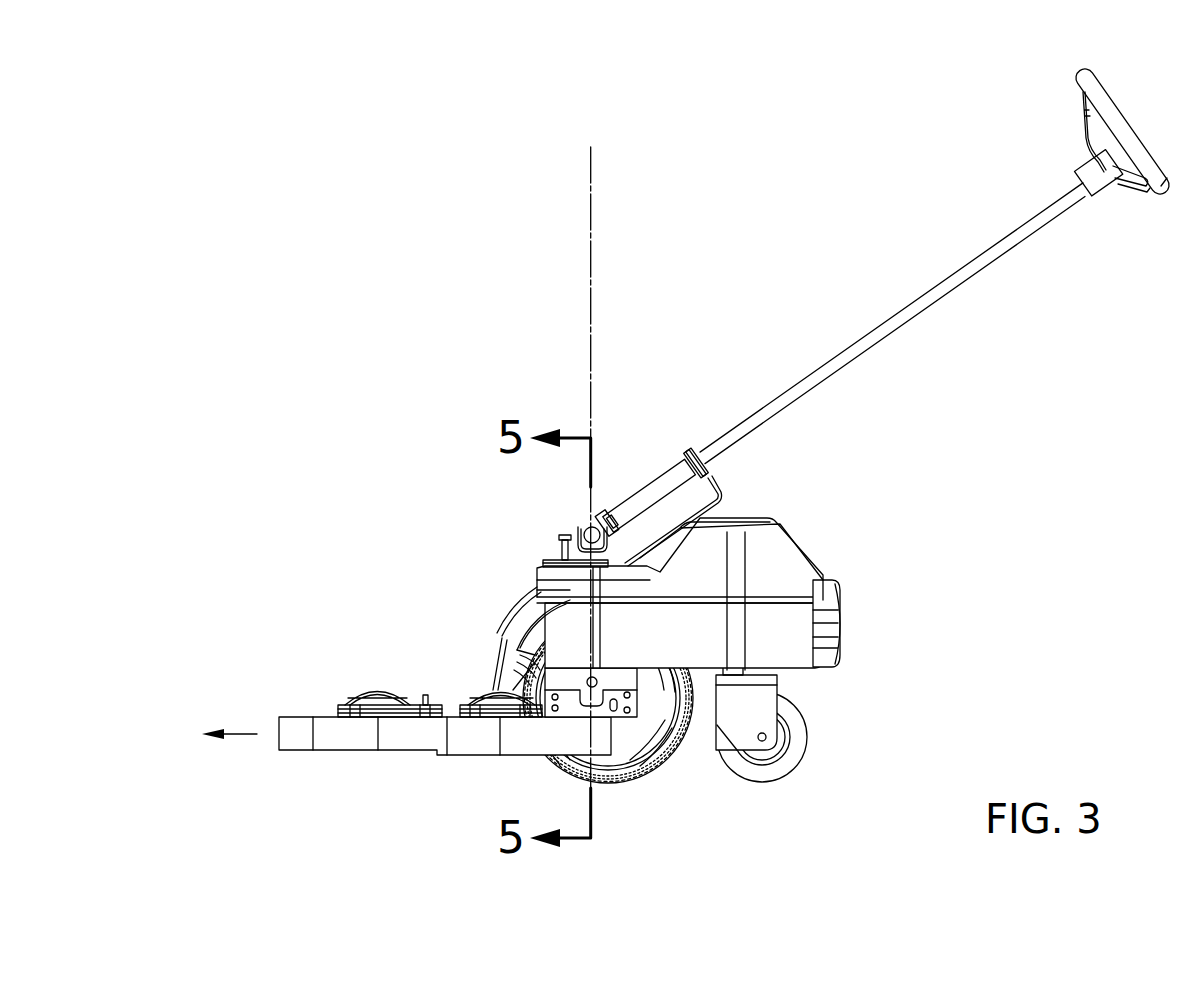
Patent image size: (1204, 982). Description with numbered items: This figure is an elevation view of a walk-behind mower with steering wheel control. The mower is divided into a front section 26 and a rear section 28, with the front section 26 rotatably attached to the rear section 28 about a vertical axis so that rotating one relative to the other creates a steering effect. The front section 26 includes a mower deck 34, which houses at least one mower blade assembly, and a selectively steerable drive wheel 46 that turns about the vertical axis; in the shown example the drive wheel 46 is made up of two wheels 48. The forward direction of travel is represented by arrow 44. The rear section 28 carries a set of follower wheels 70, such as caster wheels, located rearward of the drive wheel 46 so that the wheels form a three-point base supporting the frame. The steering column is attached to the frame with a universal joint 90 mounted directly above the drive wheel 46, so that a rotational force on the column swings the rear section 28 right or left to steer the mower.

The front section 26 is at (451, 657).
The rear section 28 is at (777, 490).
The mower deck 34 is at (278, 735).
The arrow 44 is at (236, 734).
The selectively steerable drive wheel 46 is at (645, 781).
The wheels 48 is at (667, 748).
The follower wheels 70 is at (808, 735).
The universal joint 90 is at (586, 527).